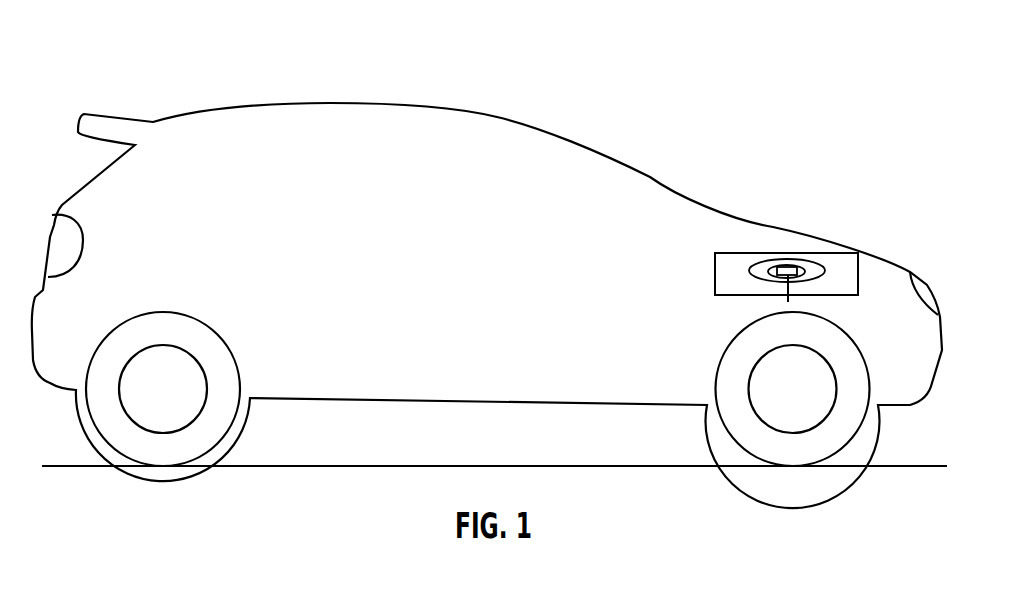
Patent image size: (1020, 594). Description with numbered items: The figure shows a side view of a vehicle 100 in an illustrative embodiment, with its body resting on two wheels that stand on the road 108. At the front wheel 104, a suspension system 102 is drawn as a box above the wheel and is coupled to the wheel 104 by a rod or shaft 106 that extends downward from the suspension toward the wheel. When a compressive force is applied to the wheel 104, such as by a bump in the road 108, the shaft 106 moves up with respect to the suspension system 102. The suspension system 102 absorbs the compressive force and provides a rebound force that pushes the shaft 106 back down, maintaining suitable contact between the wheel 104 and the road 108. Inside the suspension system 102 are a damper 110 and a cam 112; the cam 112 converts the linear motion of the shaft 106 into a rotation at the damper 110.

The vehicle 100 is at (208, 50).
The suspension system 102 is at (757, 253).
The wheel 104 is at (797, 453).
The shaft 106 is at (786, 286).
The road 108 is at (932, 468).
The damper 110 is at (813, 260).
The cam 112 is at (807, 273).